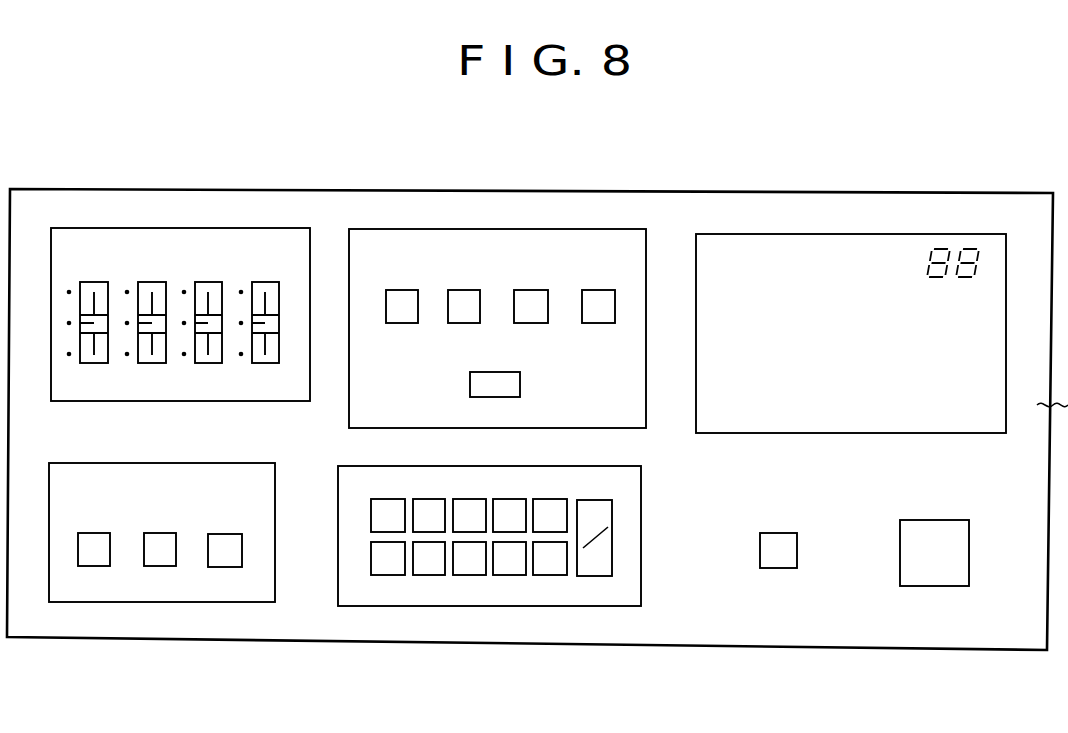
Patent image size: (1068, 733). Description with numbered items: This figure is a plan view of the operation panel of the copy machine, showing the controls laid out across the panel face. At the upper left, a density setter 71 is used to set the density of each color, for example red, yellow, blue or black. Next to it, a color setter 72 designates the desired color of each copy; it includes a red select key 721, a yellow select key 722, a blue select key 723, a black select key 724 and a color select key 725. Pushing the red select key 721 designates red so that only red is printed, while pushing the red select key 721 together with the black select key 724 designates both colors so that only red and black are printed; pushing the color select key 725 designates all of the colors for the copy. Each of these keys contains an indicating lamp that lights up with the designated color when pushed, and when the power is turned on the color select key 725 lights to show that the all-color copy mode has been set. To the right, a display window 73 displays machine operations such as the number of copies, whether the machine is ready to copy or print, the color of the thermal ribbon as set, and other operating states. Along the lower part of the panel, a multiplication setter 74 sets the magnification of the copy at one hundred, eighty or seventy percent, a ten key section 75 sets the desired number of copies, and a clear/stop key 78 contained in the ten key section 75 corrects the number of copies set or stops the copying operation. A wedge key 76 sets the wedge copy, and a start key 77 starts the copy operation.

The density setter 71 is at (157, 228).
The color setter 72 is at (510, 229).
The red select key 721 is at (386, 302).
The yellow select key 722 is at (448, 293).
The blue select key 723 is at (549, 306).
The black select key 724 is at (616, 297).
The color select key 725 is at (520, 385).
The display window 73 is at (828, 242).
The multiplication setter 74 is at (143, 602).
The ten key section 75 is at (489, 573).
The wedge key 76 is at (778, 568).
The start key 77 is at (935, 586).
The clear/stop key 78 is at (598, 578).